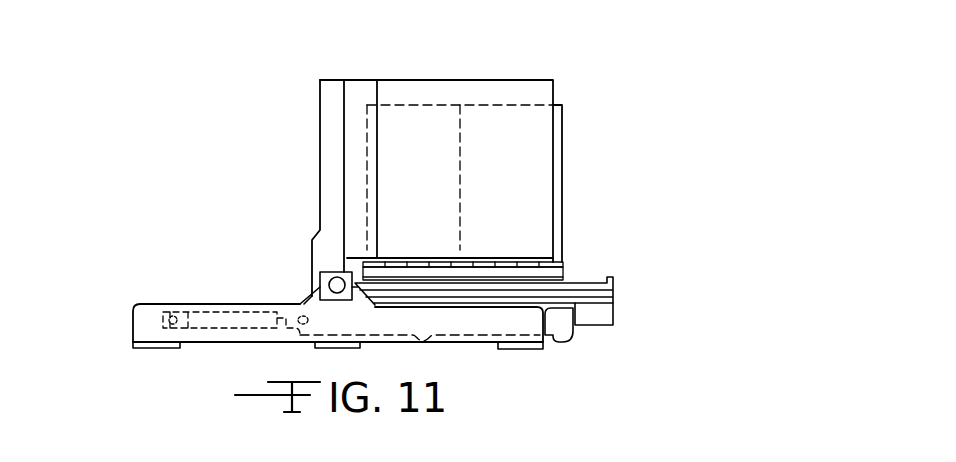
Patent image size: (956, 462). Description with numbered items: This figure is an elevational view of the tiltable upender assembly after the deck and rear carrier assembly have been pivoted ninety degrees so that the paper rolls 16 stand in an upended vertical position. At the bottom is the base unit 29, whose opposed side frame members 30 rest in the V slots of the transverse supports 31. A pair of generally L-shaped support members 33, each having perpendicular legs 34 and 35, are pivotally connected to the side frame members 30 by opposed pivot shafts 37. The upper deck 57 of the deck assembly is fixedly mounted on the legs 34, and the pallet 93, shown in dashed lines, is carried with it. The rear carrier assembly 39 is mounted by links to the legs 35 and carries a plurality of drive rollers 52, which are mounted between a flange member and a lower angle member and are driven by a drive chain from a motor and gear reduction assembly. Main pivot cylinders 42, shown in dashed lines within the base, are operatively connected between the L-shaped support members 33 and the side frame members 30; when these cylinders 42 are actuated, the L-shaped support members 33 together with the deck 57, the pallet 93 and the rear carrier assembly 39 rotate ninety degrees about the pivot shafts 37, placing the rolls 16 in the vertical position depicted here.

The paper rolls 16 is at (427, 105).
The upper deck 57 is at (378, 98).
The L-shaped support members 33 is at (312, 118).
The legs 34 is at (318, 150).
The pallet 93 is at (503, 258).
The drive rollers 52 is at (580, 283).
The rear carrier assembly 39 is at (598, 325).
The pivot shafts 37 is at (337, 272).
The side frame members 30 is at (212, 348).
The cylinders 42 is at (213, 311).
The transverse supports 31 is at (142, 348).
The base unit 29 is at (467, 343).
The legs 35 is at (552, 339).